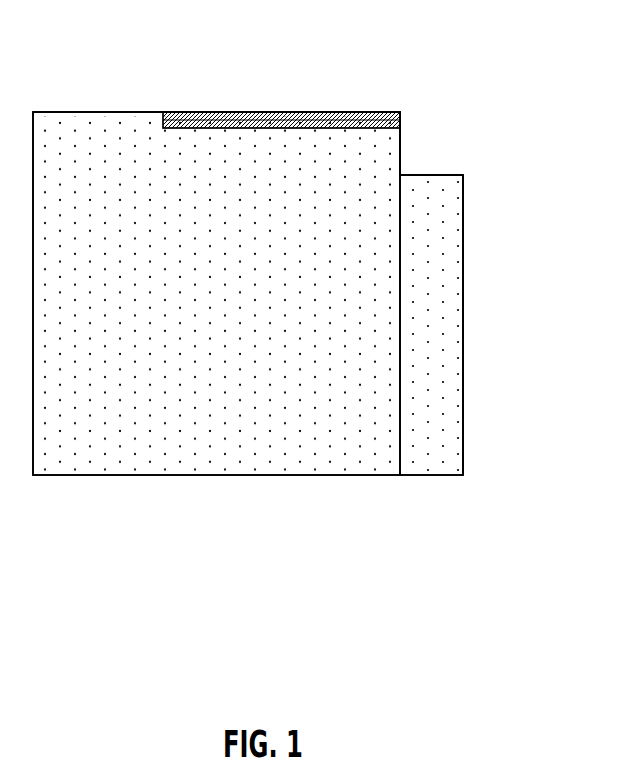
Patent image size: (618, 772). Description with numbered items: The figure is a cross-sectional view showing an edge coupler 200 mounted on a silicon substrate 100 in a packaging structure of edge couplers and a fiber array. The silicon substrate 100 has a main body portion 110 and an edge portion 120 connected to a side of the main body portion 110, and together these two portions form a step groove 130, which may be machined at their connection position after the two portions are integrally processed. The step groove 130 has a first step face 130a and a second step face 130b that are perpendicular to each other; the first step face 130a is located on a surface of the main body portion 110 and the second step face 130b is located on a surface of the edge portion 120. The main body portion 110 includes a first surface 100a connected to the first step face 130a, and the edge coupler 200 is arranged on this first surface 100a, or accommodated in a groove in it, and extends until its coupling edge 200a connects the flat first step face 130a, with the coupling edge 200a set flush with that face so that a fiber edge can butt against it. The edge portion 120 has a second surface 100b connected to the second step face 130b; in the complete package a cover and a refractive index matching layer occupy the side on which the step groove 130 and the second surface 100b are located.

The silicon substrate 100 is at (422, 547).
The main body portion 110 is at (285, 442).
The edge portion 120 is at (422, 452).
The step groove 130 is at (440, 153).
The first step face 130a is at (403, 144).
The second step face 130b is at (445, 173).
The first surface 100a is at (135, 112).
The second surface 100b is at (464, 408).
The edge coupler 200 is at (236, 120).
The coupling edge 200a is at (401, 112).